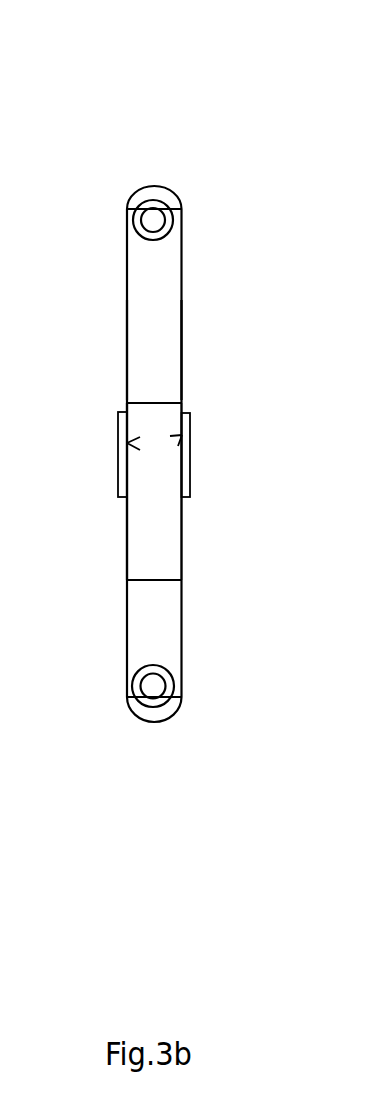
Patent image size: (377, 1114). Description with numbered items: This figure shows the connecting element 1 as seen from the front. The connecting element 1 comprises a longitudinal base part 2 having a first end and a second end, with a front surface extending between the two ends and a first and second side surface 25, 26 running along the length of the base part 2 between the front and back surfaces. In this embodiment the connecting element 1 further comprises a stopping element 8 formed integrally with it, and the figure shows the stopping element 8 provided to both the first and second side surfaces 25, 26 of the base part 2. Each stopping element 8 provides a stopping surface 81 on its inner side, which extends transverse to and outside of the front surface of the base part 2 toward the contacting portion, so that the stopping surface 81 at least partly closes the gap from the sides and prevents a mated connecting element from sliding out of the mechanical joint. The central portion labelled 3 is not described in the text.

The connecting element 1 is at (164, 370).
The base part 2 is at (162, 307).
The second connecting element 3 is at (163, 515).
The stopping element 8 is at (118, 447).
The first side surface 25 is at (127, 360).
The second side surface 26 is at (182, 377).
The stopping surface 81 is at (127, 443).